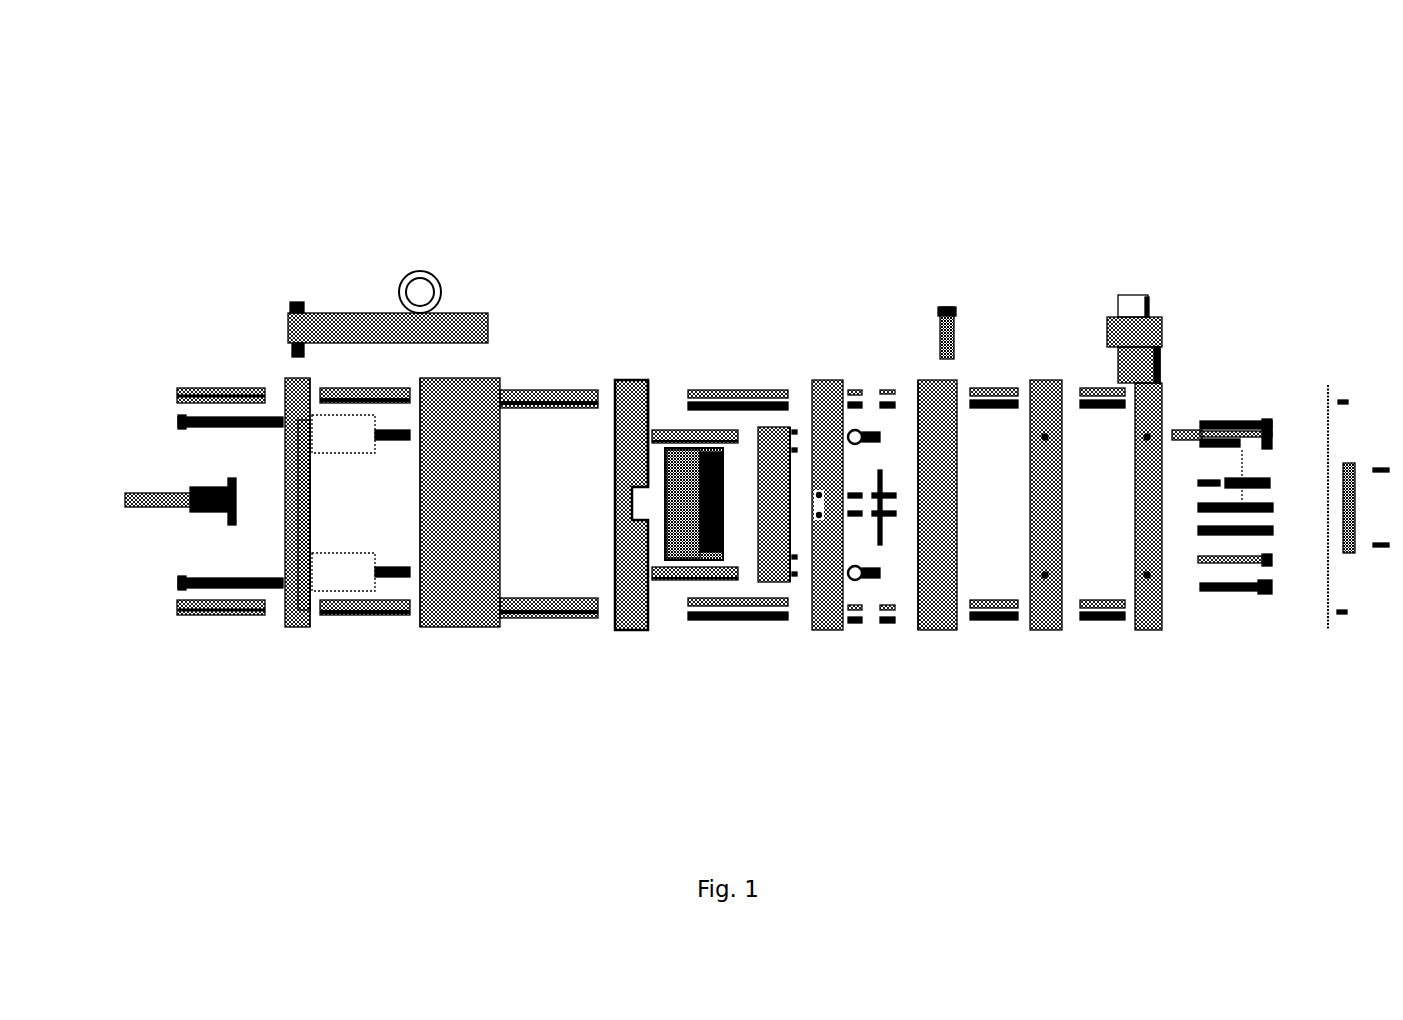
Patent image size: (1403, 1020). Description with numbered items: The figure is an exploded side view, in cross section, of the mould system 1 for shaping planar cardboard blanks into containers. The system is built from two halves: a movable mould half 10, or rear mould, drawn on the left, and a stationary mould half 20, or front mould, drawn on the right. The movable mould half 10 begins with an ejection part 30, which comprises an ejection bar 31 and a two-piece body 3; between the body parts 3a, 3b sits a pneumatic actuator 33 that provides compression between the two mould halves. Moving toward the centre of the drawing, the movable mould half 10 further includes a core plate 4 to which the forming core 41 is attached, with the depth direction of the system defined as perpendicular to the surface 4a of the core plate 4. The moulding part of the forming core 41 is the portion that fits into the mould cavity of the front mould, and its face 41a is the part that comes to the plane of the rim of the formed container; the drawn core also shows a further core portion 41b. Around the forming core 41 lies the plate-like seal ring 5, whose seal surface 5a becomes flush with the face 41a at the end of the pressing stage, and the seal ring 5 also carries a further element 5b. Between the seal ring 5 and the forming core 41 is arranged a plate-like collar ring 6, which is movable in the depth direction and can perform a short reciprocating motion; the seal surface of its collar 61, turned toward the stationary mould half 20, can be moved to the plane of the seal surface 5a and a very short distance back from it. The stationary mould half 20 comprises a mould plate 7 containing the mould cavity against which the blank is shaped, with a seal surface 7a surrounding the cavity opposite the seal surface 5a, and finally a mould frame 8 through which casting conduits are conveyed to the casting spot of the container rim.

The mould system 1 is at (793, 102).
The ejection part 30 is at (375, 238).
The stationary mould half 20 is at (1052, 265).
The movable mould half 10 is at (647, 680).
The two-piece body 3 is at (438, 613).
The body part 3a is at (433, 380).
The body part 3b is at (287, 376).
The ejection bar 31 is at (142, 490).
The pneumatic actuator 33 is at (310, 568).
The core plate 4 is at (628, 378).
The surface of the core plate 4a is at (652, 383).
The forming core 41 is at (673, 547).
The face of the moulding part of the core 41a is at (703, 457).
The core portion 41b is at (725, 460).
The seal ring 5 is at (828, 380).
The seal surface 5a is at (842, 583).
The cavity plate element 5b is at (812, 428).
The collar ring 6 is at (757, 547).
The collar 61 is at (778, 533).
The mould plate 7 is at (927, 608).
The seal surface of the mould plate 7a is at (918, 408).
The mould frame 8 is at (1147, 607).